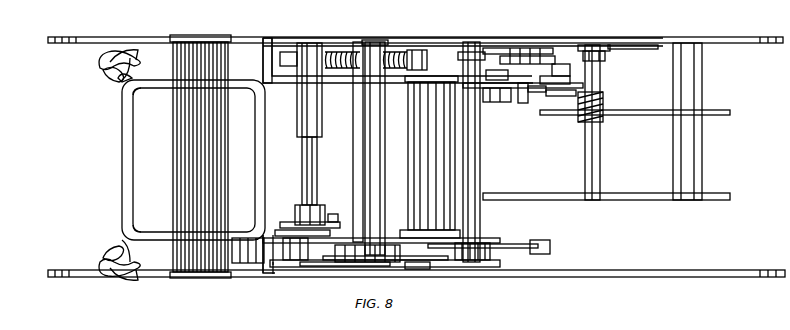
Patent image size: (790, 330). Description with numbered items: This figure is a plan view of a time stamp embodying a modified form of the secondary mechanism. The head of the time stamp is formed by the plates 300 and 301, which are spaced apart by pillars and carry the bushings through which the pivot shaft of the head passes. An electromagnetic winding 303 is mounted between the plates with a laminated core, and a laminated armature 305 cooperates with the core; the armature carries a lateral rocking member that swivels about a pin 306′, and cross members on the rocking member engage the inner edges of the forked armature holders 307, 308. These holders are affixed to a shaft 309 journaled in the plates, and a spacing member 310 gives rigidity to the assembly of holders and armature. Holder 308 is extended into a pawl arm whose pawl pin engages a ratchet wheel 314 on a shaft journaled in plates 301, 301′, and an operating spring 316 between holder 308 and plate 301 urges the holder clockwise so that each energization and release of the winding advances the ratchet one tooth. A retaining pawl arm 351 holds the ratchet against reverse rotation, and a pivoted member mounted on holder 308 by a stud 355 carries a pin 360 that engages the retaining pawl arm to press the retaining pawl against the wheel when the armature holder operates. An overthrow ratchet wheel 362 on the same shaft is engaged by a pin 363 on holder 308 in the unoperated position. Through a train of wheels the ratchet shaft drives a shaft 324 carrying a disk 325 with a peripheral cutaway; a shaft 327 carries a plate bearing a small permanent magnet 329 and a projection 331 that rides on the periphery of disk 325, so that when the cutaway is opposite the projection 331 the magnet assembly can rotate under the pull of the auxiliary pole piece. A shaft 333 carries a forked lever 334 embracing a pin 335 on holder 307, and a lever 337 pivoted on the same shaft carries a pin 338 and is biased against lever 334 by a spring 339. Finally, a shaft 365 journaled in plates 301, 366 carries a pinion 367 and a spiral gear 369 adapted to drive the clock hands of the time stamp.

The plate 300 is at (736, 269).
The plate 301 is at (748, 41).
The plate 301′ is at (730, 106).
The electromagnetic winding 303 is at (130, 170).
The laminated armature 305 is at (214, 208).
The pin 306′ is at (173, 160).
The armature holder 307 is at (263, 285).
The armature holder 308 is at (266, 60).
The shaft 309 is at (358, 122).
The spacing member 310 is at (408, 156).
The ratchet wheel 314 is at (565, 98).
The operating spring 316 is at (338, 72).
The shaft 324 is at (477, 220).
The disk 325 is at (531, 242).
The shaft 327 is at (374, 133).
The permanent magnet 329 is at (387, 276).
The projection 331 is at (440, 268).
The shaft 333 is at (297, 126).
The forked lever 334 is at (278, 220).
The pin 335 is at (330, 209).
The lever 337 is at (328, 271).
The pin 338 is at (270, 278).
The spring 339 is at (258, 232).
The retaining pawl arm 351 is at (549, 109).
The stud 355 is at (496, 111).
The pin 360 is at (529, 105).
The overthrow ratchet wheel 362 is at (610, 64).
The pin 363 is at (538, 79).
The shaft 365 is at (600, 164).
The plate 366 is at (642, 198).
The pinion 367 is at (610, 44).
The spiral gear 369 is at (602, 120).